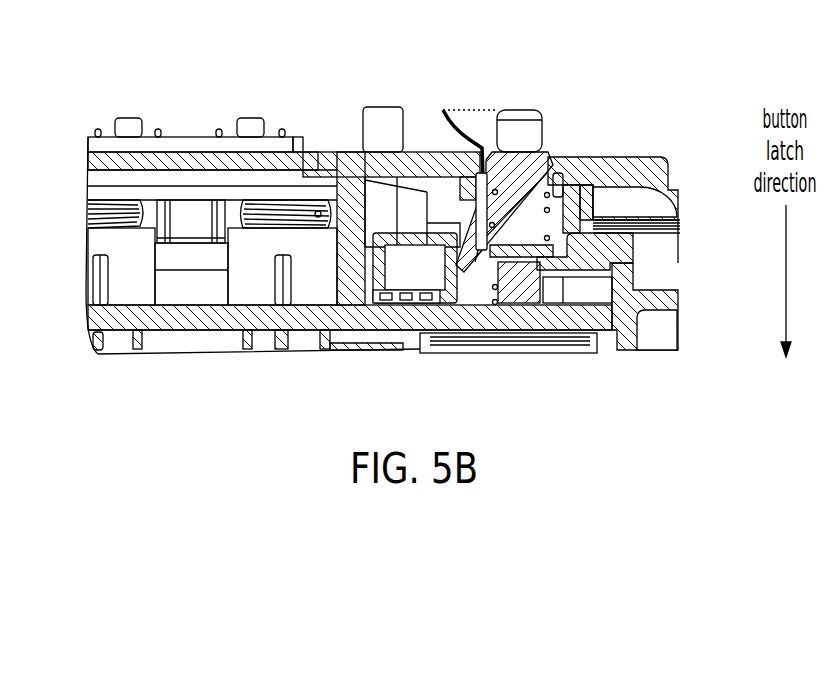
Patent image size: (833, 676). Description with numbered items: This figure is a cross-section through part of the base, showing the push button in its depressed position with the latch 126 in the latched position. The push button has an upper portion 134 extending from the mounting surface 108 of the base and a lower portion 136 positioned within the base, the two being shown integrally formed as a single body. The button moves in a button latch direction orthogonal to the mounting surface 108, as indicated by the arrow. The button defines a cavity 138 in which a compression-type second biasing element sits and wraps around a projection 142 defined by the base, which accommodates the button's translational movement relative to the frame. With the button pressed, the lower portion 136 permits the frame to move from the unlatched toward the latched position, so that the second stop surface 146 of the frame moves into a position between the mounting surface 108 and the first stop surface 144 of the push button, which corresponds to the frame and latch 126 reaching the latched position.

The mounting surface 108 is at (617, 157).
The latch 126 is at (447, 110).
The upper portion 134 is at (503, 158).
The lower portion 136 is at (455, 303).
The cavity 138 is at (563, 283).
The projection 142 is at (520, 287).
The first stop surface 144 is at (603, 270).
The second stop surface 146 is at (637, 247).